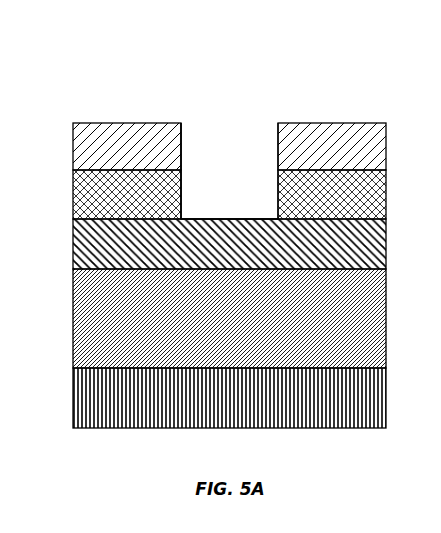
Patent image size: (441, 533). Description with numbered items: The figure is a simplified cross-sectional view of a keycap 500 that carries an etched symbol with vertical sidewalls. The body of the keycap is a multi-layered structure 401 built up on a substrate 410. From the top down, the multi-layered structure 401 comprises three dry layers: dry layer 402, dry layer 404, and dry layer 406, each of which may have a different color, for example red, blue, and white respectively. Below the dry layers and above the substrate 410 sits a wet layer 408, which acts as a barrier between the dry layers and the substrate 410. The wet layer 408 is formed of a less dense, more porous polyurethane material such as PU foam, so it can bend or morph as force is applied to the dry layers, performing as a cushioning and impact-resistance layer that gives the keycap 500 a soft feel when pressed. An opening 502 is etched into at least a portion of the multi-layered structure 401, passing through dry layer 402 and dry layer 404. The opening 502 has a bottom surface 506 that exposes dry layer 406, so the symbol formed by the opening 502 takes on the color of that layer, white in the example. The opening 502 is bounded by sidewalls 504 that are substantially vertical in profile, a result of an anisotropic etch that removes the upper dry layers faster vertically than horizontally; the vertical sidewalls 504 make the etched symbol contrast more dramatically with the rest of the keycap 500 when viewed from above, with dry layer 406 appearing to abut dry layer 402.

The keycap 500 is at (226, 221).
The opening 502 is at (225, 97).
The sidewalls 504 is at (174, 140).
The bottom surface 506 is at (250, 211).
The multi-layered structure 401 is at (226, 245).
The dry layer 402 is at (380, 139).
The dry layer 404 is at (380, 177).
The dry layer 406 is at (380, 236).
The wet layer 408 is at (380, 313).
The substrate 410 is at (380, 389).